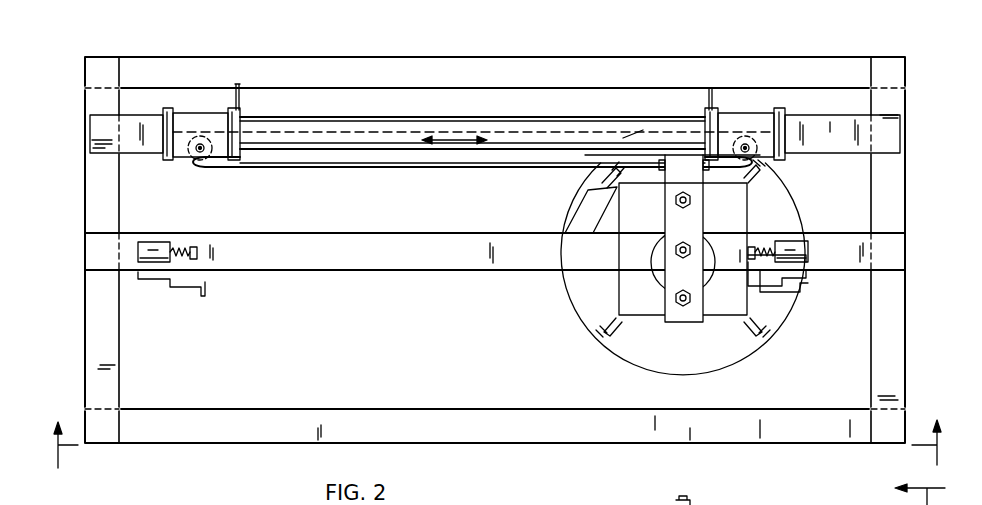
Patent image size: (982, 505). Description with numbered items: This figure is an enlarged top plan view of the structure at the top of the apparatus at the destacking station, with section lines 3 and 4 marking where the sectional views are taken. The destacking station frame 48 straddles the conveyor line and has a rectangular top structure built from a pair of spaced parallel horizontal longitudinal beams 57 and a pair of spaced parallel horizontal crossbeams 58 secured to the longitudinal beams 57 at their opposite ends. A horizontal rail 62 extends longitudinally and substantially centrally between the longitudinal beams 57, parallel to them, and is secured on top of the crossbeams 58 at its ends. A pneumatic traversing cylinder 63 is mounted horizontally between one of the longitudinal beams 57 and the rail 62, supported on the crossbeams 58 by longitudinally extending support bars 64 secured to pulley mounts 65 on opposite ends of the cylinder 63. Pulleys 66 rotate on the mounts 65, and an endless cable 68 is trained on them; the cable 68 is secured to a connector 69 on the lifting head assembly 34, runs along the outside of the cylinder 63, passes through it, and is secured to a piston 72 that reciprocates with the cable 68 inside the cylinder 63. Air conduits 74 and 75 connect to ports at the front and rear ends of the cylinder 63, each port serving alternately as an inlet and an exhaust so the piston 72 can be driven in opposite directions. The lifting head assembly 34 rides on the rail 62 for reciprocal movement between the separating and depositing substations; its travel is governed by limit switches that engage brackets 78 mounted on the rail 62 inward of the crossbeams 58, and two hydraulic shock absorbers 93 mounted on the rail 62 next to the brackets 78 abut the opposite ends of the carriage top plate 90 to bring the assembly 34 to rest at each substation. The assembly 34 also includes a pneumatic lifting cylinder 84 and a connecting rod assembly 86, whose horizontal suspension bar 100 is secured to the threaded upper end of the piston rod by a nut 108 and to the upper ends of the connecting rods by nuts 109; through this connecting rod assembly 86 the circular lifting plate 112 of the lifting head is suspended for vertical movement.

The lifting head assembly 34 is at (651, 330).
The destacking station frame 48 is at (878, 55).
The longitudinal beams 57 is at (165, 57).
The crossbeams 58 is at (85, 203).
The rail 62 is at (364, 272).
The pneumatic traversing cylinder 63 is at (520, 113).
The support bars 64 is at (102, 115).
The pulley mounts 65 is at (228, 112).
The pulleys 66 is at (210, 160).
The endless cable 68 is at (340, 168).
The connector 69 is at (680, 150).
The piston 72 is at (283, 133).
The air conduit 74 is at (240, 82).
The air conduit 75 is at (712, 86).
The brackets 78 is at (206, 296).
The pneumatic lifting cylinder 84 is at (742, 280).
The connecting rod assembly 86 is at (625, 352).
The top plate 90 is at (742, 345).
The hydraulic shock absorbers 93 is at (155, 240).
The suspension bar 100 is at (686, 322).
The nut 108 is at (680, 256).
The nuts 109 is at (692, 200).
The lifting plate 112 is at (792, 312).
The section line 3- 3 is at (496, 457).
The section line 4- 4 is at (929, 493).